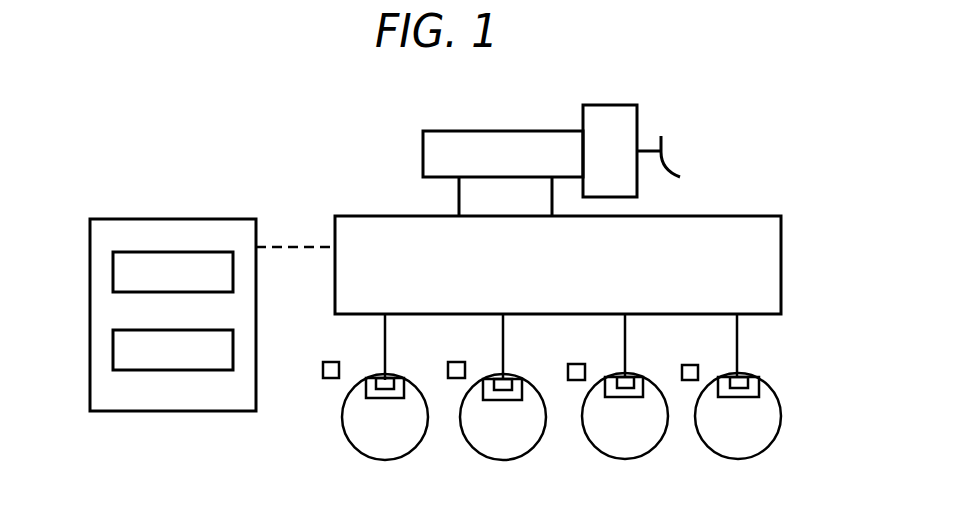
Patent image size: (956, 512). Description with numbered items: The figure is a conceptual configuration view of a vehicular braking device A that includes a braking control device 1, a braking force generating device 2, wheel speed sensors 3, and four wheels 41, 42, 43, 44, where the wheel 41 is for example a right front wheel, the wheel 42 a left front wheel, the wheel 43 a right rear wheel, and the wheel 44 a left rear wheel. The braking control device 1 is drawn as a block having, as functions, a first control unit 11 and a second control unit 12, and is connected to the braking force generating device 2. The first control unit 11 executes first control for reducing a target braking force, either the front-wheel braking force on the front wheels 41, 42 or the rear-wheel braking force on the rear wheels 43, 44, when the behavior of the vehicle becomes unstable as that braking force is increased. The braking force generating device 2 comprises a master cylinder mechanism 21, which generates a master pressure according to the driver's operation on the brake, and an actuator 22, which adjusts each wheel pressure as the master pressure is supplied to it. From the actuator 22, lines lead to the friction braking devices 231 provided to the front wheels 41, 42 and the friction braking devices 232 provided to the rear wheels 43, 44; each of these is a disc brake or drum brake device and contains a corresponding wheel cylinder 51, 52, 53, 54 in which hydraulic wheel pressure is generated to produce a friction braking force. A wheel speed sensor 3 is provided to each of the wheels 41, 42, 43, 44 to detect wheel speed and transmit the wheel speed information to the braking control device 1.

The vehicular braking device A is at (198, 115).
The braking control device 1 is at (115, 218).
The first control unit 11 is at (118, 271).
The second control unit 12 is at (120, 348).
The braking force generating device 2 is at (370, 125).
The master cylinder mechanism 21 is at (485, 135).
The actuator 22 is at (363, 215).
The wheel speed sensor 3 is at (323, 370).
The wheel 41 is at (370, 445).
The wheel 42 is at (494, 442).
The wheel 43 is at (632, 443).
The wheel 44 is at (748, 443).
The friction braking device 231 is at (367, 400).
The friction braking device 232 is at (612, 398).
The wheel cylinder 51 is at (382, 380).
The wheel cylinder 52 is at (500, 382).
The wheel cylinder 53 is at (622, 375).
The wheel cylinder 54 is at (737, 378).